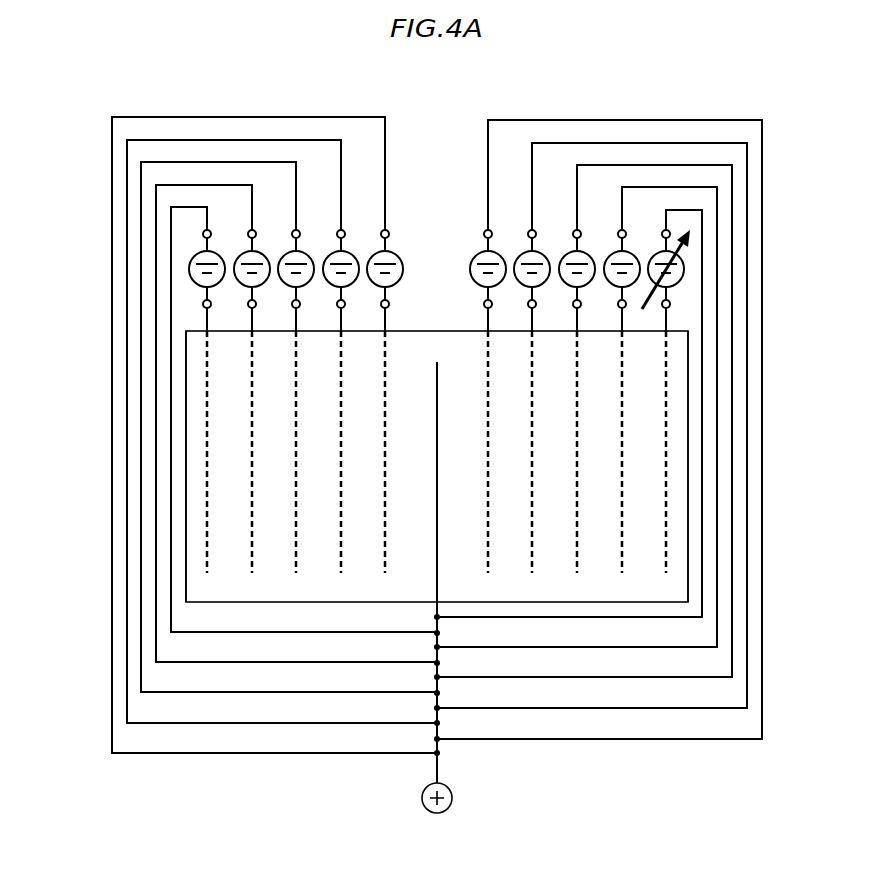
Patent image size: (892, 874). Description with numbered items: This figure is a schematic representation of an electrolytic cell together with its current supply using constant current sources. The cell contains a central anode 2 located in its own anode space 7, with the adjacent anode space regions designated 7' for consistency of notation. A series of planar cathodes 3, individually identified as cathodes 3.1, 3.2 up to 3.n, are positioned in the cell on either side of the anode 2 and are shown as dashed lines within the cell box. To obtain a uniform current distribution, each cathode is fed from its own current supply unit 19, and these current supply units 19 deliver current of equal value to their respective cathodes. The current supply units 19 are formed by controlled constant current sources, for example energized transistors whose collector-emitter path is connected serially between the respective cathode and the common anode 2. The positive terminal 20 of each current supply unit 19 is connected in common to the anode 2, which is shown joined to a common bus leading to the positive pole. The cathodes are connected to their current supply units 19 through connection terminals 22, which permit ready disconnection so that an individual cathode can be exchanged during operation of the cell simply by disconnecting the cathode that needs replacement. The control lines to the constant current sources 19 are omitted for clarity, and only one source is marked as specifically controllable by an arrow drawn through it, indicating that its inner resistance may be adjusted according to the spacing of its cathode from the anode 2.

The anode 2 is at (437, 568).
The planar cathode 3 is at (532, 542).
The first cathode 3.1 is at (666, 542).
The second cathode 3.2 is at (622, 542).
The n-th cathode 3.n is at (488, 542).
The anode space 7 is at (409, 572).
The anode space 7' is at (752, 466).
The current supply unit 19 is at (470, 262).
The positive terminal 20 is at (485, 231).
The connection terminal 22 is at (484, 305).